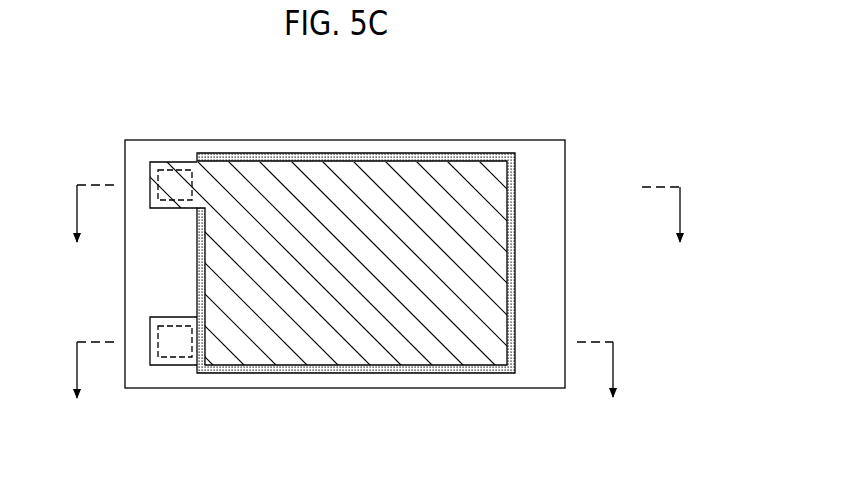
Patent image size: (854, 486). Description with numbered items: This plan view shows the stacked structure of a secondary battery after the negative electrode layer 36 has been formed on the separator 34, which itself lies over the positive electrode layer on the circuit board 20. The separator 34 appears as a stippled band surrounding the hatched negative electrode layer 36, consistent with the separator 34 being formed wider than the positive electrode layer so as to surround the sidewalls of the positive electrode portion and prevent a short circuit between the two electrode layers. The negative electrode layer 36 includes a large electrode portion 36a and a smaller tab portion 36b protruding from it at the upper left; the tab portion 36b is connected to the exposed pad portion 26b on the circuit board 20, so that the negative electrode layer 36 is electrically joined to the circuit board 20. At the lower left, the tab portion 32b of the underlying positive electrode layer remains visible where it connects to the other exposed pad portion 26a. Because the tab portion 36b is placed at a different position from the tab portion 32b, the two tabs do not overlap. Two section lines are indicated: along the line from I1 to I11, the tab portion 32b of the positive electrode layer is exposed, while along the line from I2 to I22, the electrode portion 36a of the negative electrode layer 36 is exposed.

The circuit board 20 is at (565, 190).
The separator 34 is at (515, 262).
The negative electrode layer 36 is at (387, 364).
The electrode portion 36a is at (372, 200).
The tab portion 36b is at (175, 168).
The pad portion 26a is at (168, 340).
The pad portion 26b is at (172, 188).
The tab portion 32b is at (170, 366).
The section line I1-I11 I1 is at (83, 370).
The section line I2-I22 I2 is at (82, 214).
The section line I1- I11 is at (610, 370).
The section line I2- I22 is at (681, 215).